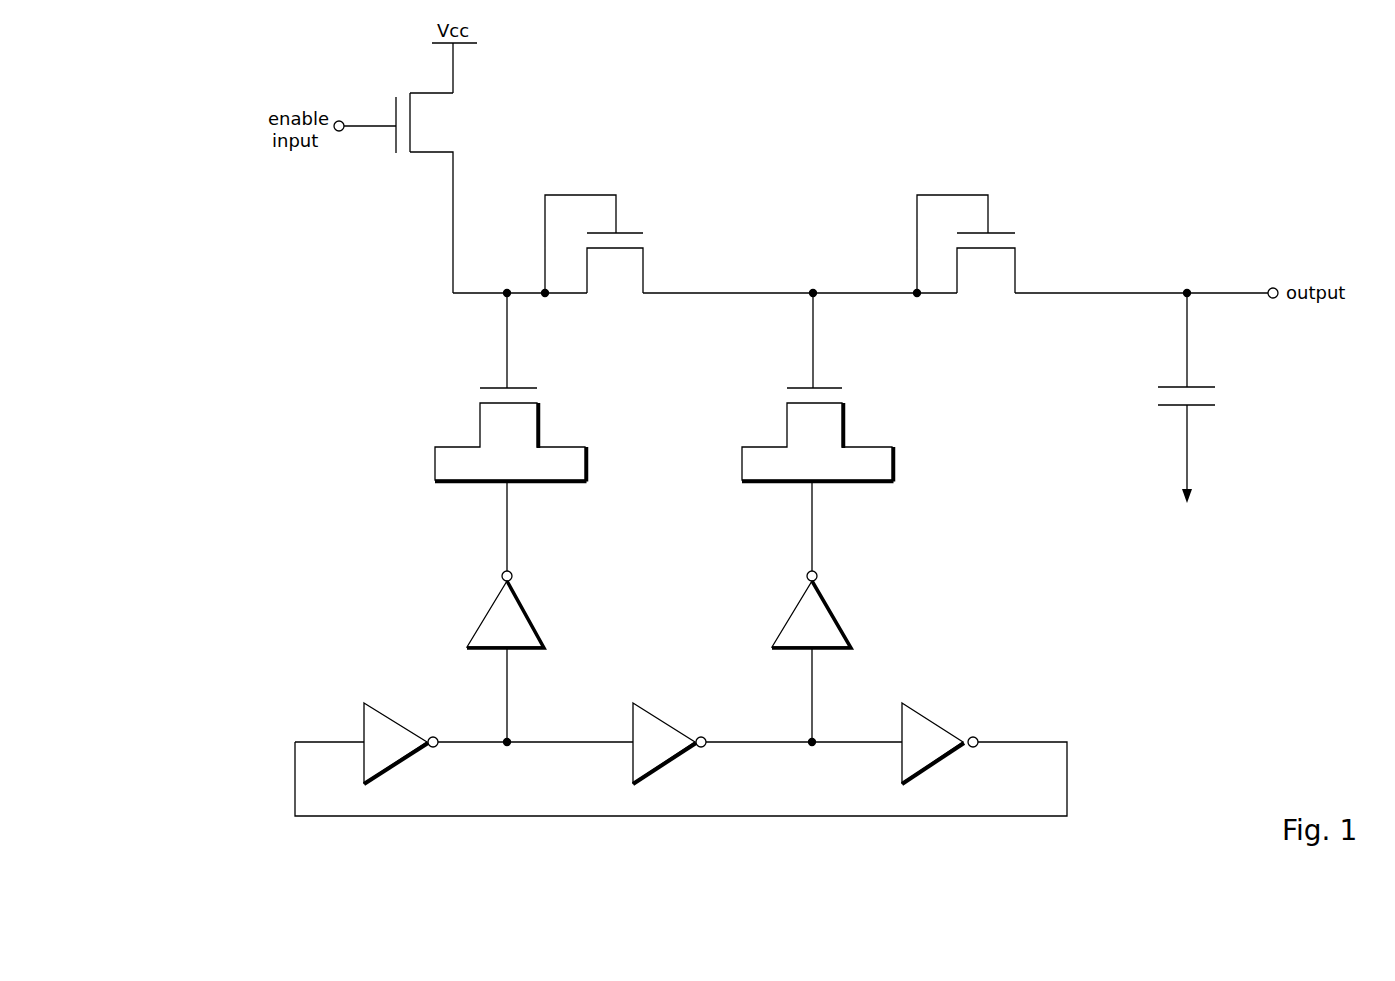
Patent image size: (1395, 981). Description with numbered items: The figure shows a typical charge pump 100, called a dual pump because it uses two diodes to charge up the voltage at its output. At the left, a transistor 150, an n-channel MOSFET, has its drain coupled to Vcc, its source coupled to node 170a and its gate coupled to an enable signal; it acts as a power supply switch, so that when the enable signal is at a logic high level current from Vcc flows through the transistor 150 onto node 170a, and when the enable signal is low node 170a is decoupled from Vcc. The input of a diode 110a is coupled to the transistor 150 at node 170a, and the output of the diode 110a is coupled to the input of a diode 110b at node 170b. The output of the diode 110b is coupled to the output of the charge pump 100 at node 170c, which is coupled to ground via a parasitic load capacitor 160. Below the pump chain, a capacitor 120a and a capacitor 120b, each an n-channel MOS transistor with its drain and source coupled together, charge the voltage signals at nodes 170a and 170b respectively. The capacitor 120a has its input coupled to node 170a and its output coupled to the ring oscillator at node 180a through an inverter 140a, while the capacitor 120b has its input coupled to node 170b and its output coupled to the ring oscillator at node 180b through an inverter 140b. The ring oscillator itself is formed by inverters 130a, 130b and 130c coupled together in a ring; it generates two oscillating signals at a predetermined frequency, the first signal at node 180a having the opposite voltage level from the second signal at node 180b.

The charge pump 100 is at (1213, 113).
The diode 110a is at (593, 246).
The diode 110b is at (965, 246).
The capacitor 120a is at (532, 463).
The capacitor 120b is at (837, 462).
The inverter 130a is at (412, 750).
The inverter 130b is at (677, 750).
The inverter 130c is at (948, 750).
The inverter 140a is at (530, 641).
The inverter 140b is at (835, 642).
The transistor 150 is at (425, 193).
The parasitic load capacitor 160 is at (1207, 444).
The node 170a is at (513, 327).
The node 170b is at (818, 327).
The node 170c is at (1188, 327).
The node 180a is at (503, 753).
The node 180b is at (811, 753).